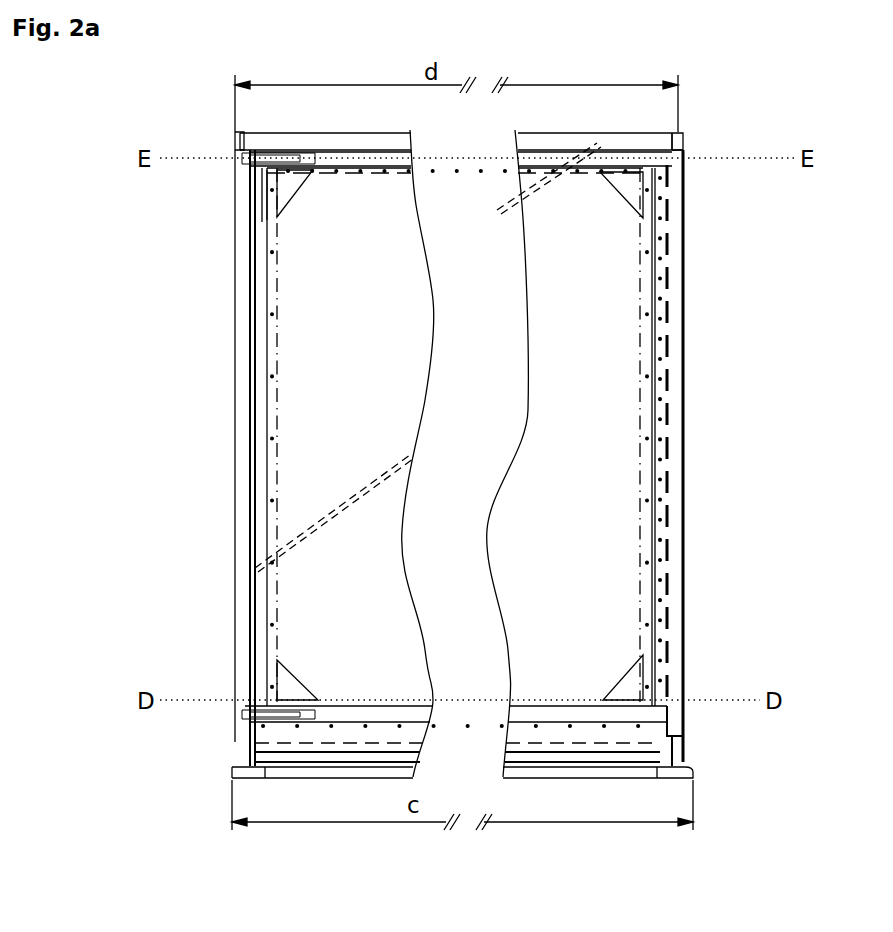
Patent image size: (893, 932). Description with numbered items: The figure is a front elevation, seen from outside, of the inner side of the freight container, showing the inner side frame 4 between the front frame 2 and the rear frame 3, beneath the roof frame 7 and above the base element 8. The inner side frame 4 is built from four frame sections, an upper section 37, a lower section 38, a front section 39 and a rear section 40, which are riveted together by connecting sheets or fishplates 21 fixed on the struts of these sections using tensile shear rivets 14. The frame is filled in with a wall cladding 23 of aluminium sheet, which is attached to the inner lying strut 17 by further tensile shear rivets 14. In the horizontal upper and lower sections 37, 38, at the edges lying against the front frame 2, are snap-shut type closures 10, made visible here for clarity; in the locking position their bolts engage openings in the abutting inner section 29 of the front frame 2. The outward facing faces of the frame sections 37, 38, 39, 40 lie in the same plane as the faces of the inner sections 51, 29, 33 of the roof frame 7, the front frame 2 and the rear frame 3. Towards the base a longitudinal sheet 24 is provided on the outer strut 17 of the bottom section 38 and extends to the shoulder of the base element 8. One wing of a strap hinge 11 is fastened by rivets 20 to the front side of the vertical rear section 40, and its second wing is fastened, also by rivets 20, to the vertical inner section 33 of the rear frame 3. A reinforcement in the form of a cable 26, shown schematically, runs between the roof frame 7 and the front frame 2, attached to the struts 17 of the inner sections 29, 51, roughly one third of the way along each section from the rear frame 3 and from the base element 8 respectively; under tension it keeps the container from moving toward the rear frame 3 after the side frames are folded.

The front frame 2 is at (235, 280).
The rear frame 3 is at (687, 723).
The inner side frame 4 is at (268, 366).
The roof frame 7 is at (563, 136).
The base element 8 is at (503, 770).
The snap-shut type closure 10 is at (250, 173).
The strap hinge 11 is at (685, 172).
The tensile shear rivets 14 is at (642, 218).
The strut 17 is at (516, 178).
The rivets 20 is at (660, 394).
The connecting sheets or fishplates 21 is at (285, 190).
The wall cladding 23 is at (560, 318).
The longitudinal sheet 24 is at (505, 748).
The cable 26 is at (500, 207).
The inner section of the front frame 29 is at (248, 527).
The inner section of the rear frame 33 is at (688, 154).
The upper frame section 37 is at (517, 157).
The lower frame section 38 is at (510, 700).
The front frame section 39 is at (264, 443).
The rear frame section 40 is at (647, 236).
The inner section of the roof frame 51 is at (518, 133).